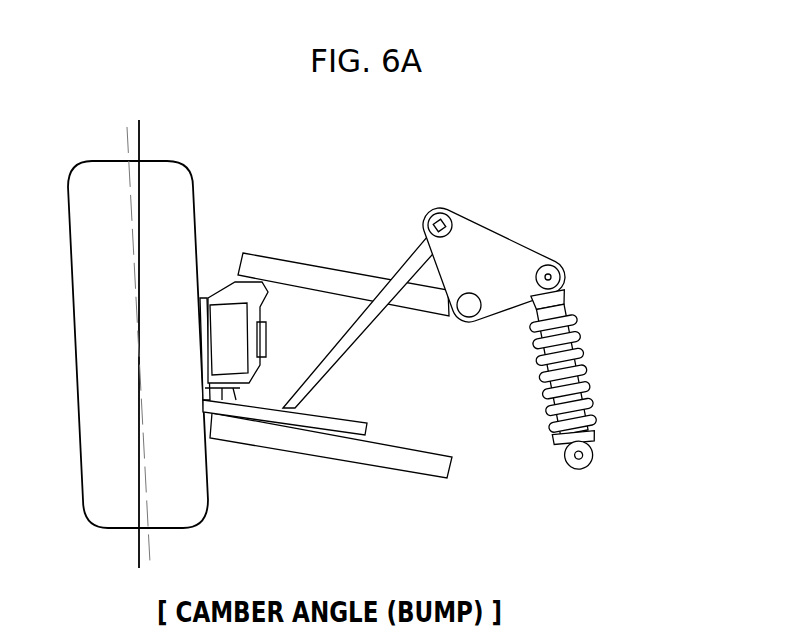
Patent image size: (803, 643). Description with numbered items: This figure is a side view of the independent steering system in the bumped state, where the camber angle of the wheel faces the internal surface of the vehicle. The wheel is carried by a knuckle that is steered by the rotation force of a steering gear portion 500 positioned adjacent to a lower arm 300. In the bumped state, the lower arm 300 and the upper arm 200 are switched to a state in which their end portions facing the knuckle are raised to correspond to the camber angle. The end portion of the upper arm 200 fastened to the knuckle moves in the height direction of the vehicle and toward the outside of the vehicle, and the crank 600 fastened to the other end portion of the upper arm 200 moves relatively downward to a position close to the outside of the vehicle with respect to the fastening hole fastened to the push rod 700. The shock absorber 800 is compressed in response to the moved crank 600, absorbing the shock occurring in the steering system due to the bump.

The upper arm 200 is at (295, 272).
The lower arm 300 is at (393, 460).
The steering gear portion 500 is at (319, 423).
The crank 600 is at (485, 245).
The push rod 700 is at (353, 332).
The shock absorber 800 is at (551, 361).